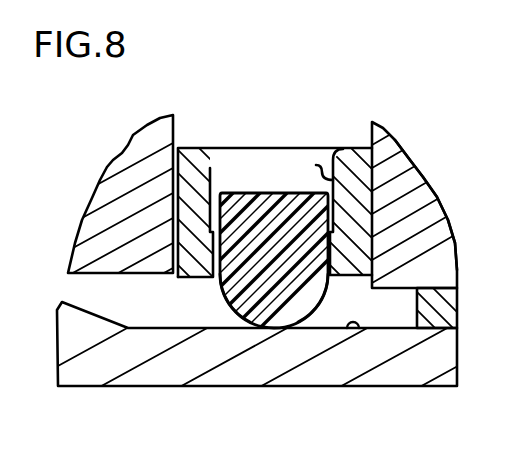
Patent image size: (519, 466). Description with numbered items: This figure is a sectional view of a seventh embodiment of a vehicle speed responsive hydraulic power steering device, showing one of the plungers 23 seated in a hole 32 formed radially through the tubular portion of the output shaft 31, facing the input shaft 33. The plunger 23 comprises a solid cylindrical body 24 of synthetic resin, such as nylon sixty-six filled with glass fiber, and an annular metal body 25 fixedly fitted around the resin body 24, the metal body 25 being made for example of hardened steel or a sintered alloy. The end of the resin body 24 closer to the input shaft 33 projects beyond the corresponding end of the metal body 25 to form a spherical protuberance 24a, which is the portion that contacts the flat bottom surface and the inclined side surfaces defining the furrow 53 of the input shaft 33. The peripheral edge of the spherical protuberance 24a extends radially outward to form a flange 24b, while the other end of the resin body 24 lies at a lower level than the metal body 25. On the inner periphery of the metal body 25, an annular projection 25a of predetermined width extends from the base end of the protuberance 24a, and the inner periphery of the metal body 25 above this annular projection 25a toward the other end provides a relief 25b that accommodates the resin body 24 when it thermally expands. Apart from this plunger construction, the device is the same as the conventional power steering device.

The plunger 23 is at (173, 248).
The solid cylindrical body 24 is at (267, 195).
The spherical protuberance 24a is at (292, 318).
The flange 24b is at (207, 283).
The annular metal body 25 is at (360, 183).
The annular projection 25a is at (403, 221).
The relief 25b is at (318, 163).
The output shaft 31 is at (125, 210).
The holes 32 is at (176, 132).
The input shaft 33 is at (433, 370).
The furrows 53 is at (360, 326).